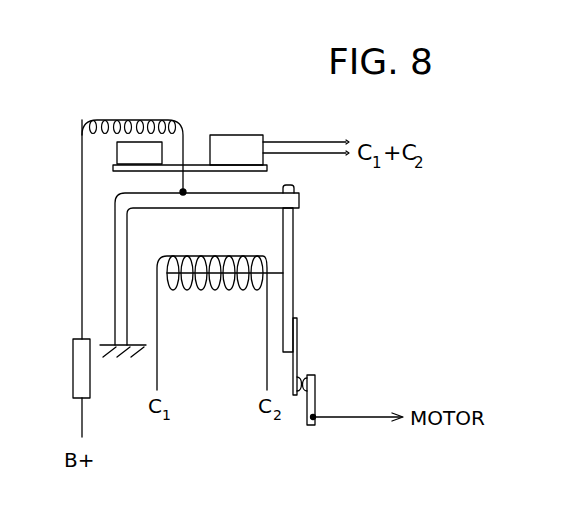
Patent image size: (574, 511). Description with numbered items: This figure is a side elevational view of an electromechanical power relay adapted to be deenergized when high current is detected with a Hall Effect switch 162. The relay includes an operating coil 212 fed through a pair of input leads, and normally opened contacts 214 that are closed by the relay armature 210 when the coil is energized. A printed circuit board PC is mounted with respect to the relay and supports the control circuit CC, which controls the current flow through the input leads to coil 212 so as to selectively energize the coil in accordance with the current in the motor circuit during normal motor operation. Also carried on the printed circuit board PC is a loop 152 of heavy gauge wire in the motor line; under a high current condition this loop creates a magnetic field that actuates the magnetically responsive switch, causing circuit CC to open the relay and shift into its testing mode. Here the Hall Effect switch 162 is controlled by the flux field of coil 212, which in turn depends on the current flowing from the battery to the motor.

The loop 152 is at (132, 118).
The Hall Effect switch 162 is at (159, 141).
The armature 210 is at (302, 271).
The operating coil 212 is at (212, 295).
The normally opened contacts 214 is at (305, 373).
The printed circuit board PC is at (195, 160).
The circuit CC is at (264, 131).